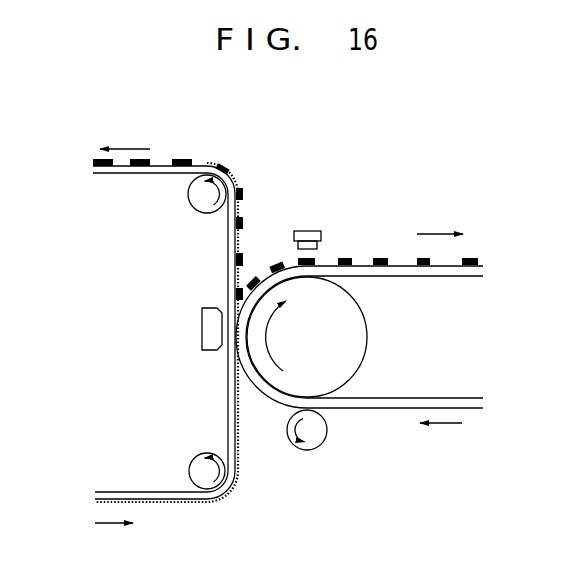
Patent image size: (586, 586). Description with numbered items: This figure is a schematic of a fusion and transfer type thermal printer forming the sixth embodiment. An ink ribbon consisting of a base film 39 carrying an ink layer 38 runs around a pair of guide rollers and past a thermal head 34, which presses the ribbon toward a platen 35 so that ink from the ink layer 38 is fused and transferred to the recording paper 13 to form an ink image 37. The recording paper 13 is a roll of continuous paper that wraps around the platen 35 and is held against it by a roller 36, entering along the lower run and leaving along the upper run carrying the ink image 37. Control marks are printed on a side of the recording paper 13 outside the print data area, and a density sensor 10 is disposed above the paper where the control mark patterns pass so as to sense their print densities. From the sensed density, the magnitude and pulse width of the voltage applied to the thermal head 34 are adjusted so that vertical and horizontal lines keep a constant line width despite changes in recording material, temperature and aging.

The density sensor 10 is at (302, 231).
The recording paper 13 is at (441, 397).
The thermal head 34 is at (202, 328).
The platen 35 is at (367, 320).
The roller 36 is at (324, 444).
The ink image 37 is at (378, 257).
The ink layer 38 is at (173, 502).
The base film 39 is at (113, 492).